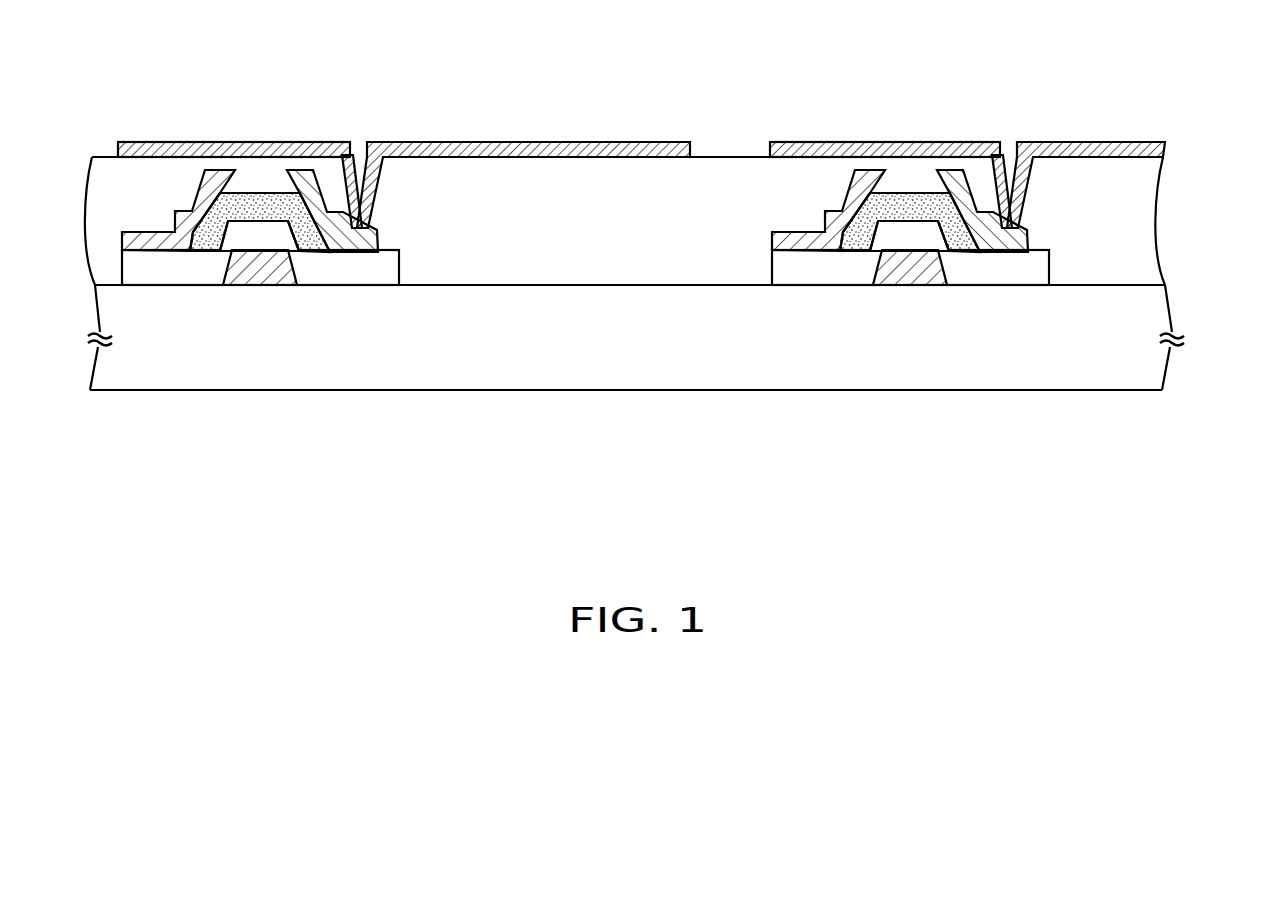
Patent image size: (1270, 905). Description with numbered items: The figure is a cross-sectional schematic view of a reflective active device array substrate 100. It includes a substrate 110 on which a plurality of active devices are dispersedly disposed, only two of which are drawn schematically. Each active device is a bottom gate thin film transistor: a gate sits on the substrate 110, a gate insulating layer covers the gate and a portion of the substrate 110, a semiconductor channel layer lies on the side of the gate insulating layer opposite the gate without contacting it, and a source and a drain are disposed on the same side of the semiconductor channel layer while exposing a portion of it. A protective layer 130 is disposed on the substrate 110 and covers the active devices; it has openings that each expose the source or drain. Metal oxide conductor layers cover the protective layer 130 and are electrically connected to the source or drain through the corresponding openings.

The reflective active device array substrate 100 is at (669, 311).
The substrate 110 is at (1118, 357).
The protective layer 130 is at (1118, 222).